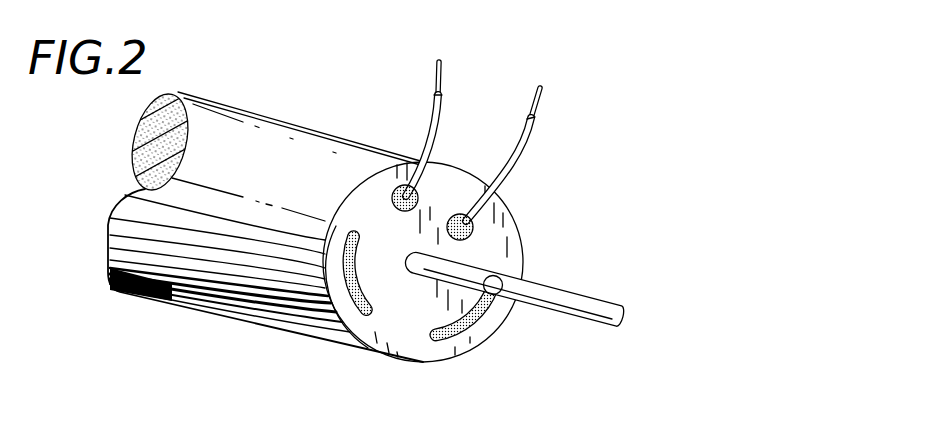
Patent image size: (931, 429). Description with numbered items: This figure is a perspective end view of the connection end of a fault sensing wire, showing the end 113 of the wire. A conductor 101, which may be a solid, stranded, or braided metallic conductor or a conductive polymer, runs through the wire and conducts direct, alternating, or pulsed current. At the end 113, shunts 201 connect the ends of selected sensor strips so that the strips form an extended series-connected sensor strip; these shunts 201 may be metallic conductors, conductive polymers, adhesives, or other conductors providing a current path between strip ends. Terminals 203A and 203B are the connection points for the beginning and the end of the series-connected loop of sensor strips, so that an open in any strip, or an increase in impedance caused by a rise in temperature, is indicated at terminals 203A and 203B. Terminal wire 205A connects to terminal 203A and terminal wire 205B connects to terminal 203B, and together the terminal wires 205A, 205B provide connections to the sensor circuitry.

The conductor 101 is at (595, 298).
The end 113 is at (347, 193).
The shunts 201 is at (345, 283).
The terminal 203A is at (388, 190).
The terminal 203B is at (472, 235).
The terminal wire 205A is at (443, 97).
The terminal wire 205B is at (533, 153).